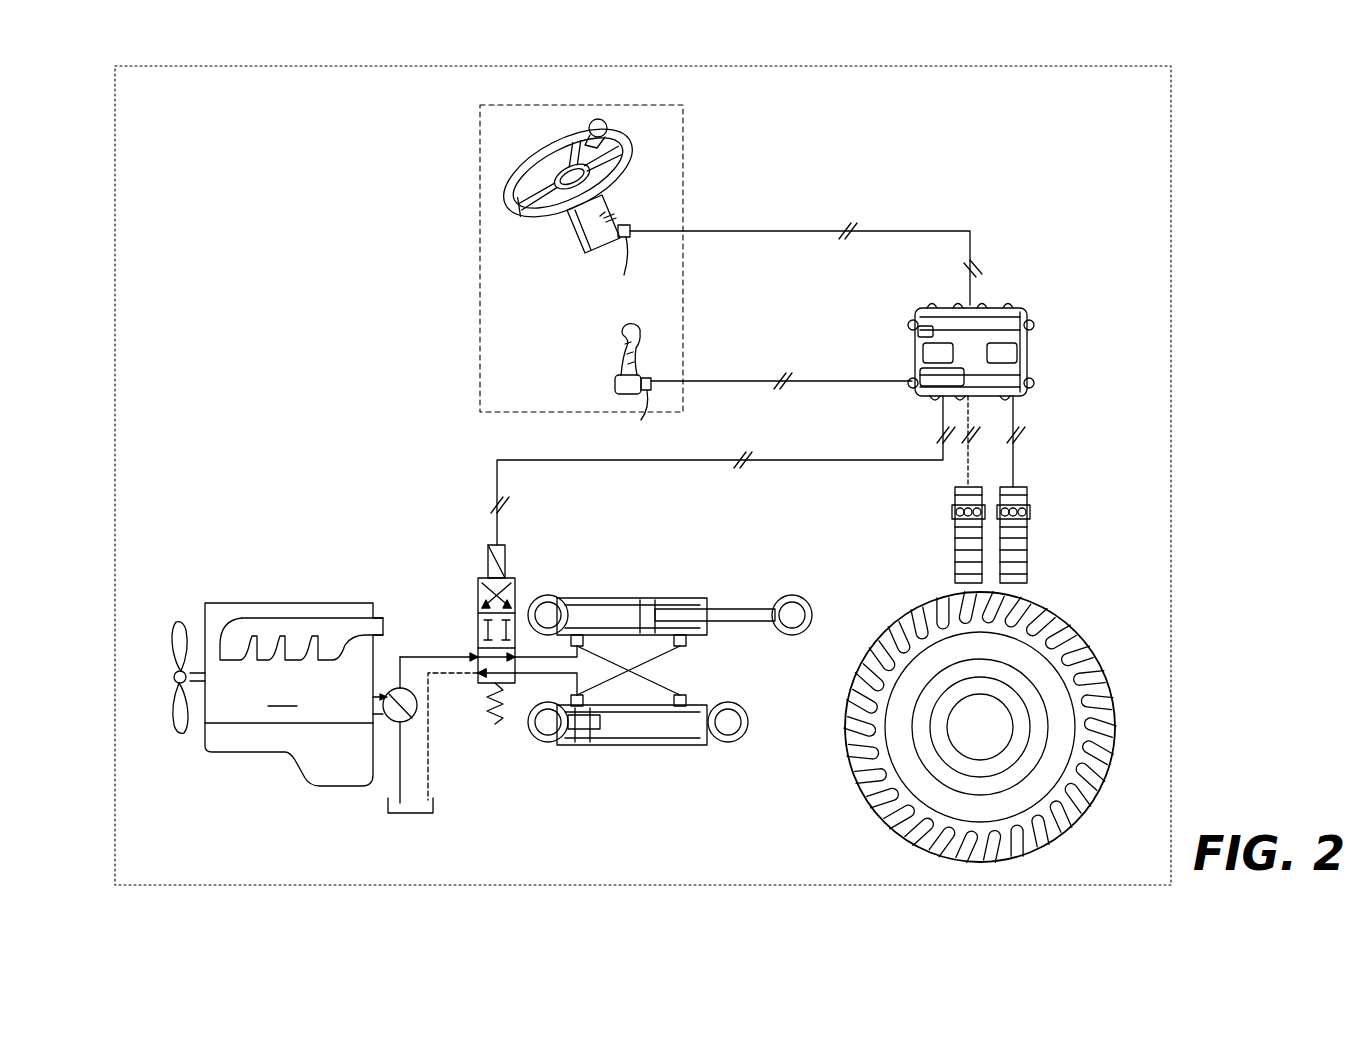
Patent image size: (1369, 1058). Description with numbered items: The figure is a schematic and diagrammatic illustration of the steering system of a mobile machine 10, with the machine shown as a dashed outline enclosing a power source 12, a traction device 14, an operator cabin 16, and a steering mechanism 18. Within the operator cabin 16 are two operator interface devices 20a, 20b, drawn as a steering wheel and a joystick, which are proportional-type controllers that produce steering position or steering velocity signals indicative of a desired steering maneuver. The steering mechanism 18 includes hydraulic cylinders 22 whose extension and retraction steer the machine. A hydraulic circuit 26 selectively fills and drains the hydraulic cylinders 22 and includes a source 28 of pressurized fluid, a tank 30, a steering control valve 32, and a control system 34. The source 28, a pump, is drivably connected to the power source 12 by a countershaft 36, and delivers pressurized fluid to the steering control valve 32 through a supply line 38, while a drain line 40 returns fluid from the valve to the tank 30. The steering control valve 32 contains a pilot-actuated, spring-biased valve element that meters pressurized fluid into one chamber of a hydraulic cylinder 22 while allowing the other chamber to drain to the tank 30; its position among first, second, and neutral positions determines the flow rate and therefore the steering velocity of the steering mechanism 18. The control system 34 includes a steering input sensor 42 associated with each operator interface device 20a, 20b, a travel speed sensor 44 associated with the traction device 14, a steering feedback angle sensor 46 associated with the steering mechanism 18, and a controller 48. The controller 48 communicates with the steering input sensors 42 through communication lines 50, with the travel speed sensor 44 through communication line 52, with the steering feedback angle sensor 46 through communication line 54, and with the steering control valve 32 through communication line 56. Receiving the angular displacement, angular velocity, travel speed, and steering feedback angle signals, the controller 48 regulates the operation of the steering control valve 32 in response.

The machine 10 is at (1171, 650).
The power source 12 is at (277, 694).
The traction device 14 is at (1112, 722).
The operator cabin 16 is at (683, 202).
The steering mechanism 18 is at (722, 770).
The operator interface device 20a is at (607, 122).
The operator interface device 20b is at (618, 368).
The hydraulic cylinder 22 is at (668, 598).
The hydraulic circuit 26 is at (722, 665).
The source 28 is at (383, 712).
The tank 30 is at (435, 805).
The steering control valve 32 is at (505, 565).
The control system 34 is at (1002, 195).
The countershaft 36 is at (388, 700).
The supply line 38 is at (440, 657).
The drain line 40 is at (428, 765).
The steering input sensor 42 is at (623, 345).
The travel speed sensor 44 is at (955, 548).
The steering feedback angle sensor 46 is at (1027, 548).
The controller 48 is at (1018, 305).
The communication line 50 is at (895, 231).
The communication line 52 is at (968, 470).
The communication line 54 is at (1013, 470).
The communication line 56 is at (853, 460).